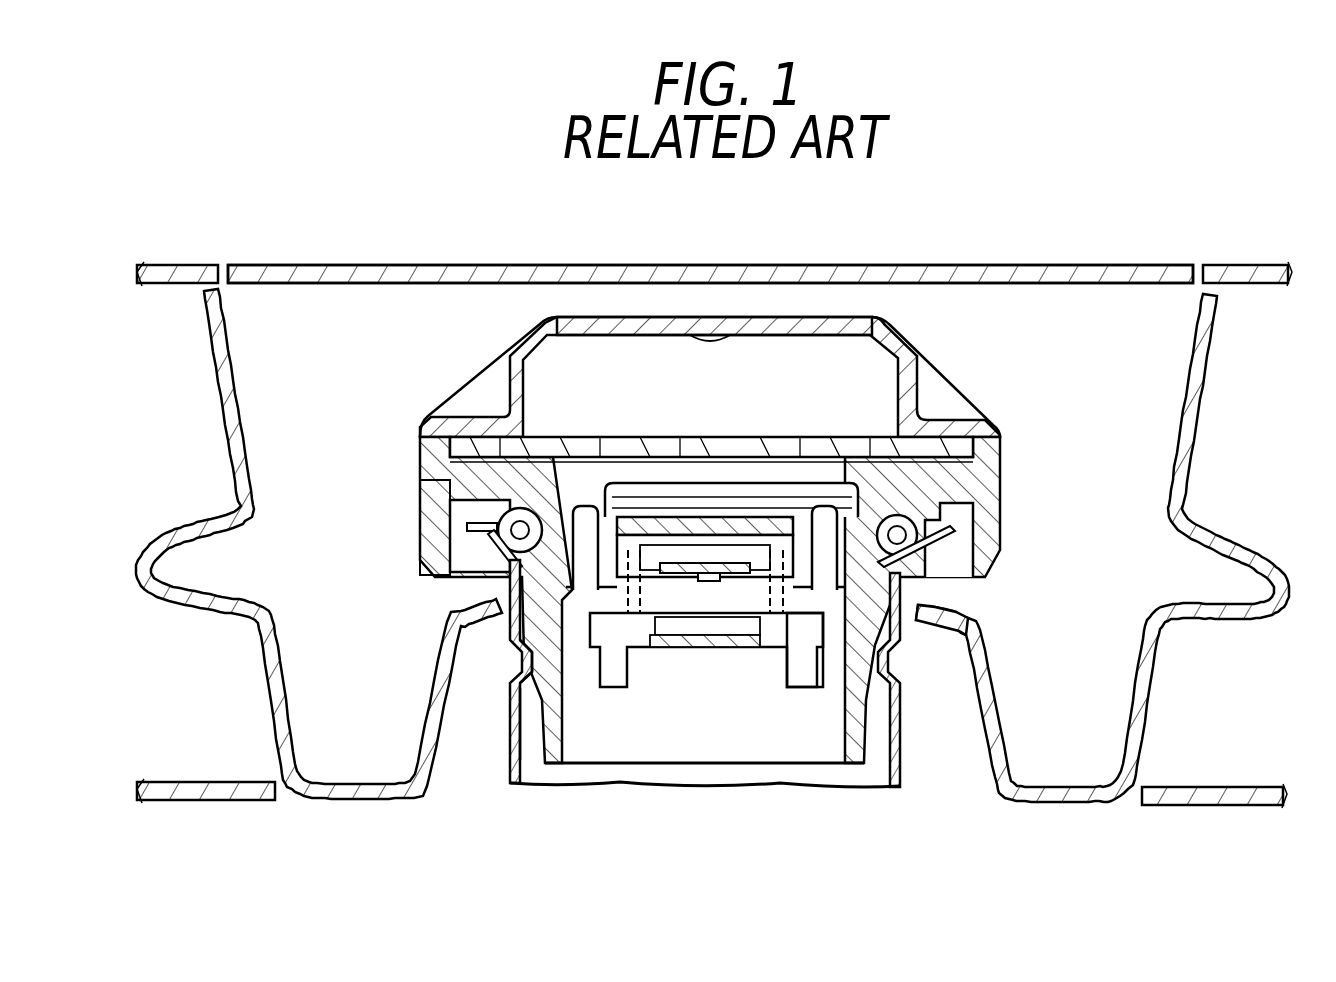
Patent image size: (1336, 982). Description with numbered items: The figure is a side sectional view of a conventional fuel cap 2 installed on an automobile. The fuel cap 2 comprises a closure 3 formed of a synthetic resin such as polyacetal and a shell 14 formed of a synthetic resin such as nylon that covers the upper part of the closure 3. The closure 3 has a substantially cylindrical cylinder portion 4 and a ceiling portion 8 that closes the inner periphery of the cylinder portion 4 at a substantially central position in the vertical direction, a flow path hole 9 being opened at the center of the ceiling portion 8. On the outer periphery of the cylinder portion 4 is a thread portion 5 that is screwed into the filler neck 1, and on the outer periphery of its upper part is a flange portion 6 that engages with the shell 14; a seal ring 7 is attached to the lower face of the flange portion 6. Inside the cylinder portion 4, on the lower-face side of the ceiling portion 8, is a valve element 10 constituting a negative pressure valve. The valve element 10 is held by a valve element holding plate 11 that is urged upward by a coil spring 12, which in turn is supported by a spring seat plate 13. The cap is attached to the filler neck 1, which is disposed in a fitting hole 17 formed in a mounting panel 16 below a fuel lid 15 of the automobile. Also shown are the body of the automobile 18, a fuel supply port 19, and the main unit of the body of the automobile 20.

The filler neck 1 is at (533, 727).
The fuel cap 2 is at (993, 392).
The closure 3 is at (508, 733).
The cylinder portion 4 is at (520, 650).
The thread portion 5 is at (520, 700).
The flange portion 6 is at (422, 500).
The seal ring 7 is at (883, 534).
The ceiling portion 8 is at (817, 504).
The flow path hole 9 is at (710, 522).
The valve element 10 is at (708, 580).
The valve element holding plate 11 is at (617, 552).
The coil spring 12 is at (782, 667).
The spring seat plate 13 is at (820, 653).
The shell 14 is at (556, 318).
The fuel lid 15 is at (1052, 256).
The mounting panel 16 is at (1259, 620).
The fitting hole 17 is at (913, 627).
The body of the automobile 18 is at (1251, 272).
The fuel supply port 19 is at (366, 270).
The main unit of the body of the automobile 20 is at (1240, 806).